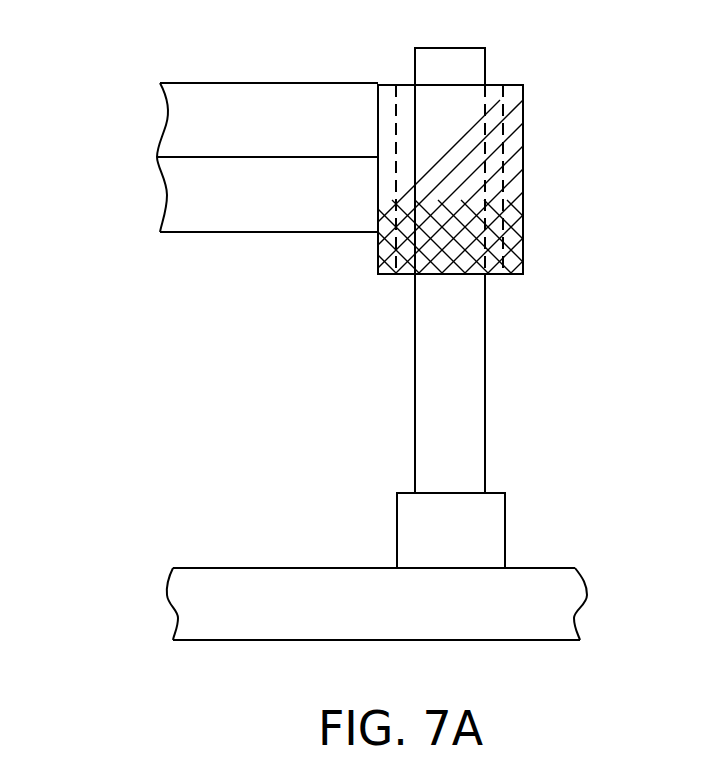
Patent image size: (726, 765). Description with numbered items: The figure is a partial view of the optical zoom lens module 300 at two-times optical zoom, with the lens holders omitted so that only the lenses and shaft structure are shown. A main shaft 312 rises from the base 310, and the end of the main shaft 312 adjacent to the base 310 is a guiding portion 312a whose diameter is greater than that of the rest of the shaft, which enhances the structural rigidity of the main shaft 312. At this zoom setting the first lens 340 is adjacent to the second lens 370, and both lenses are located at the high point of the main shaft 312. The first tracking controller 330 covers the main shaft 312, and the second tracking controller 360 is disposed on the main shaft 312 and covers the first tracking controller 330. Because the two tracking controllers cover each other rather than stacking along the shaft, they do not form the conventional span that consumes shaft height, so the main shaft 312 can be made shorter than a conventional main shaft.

The optical zoom lens module 300 is at (664, 664).
The base 310 is at (177, 587).
The main shaft 312 is at (427, 390).
The guiding portion 312a is at (407, 537).
The first tracking controller 330 is at (503, 103).
The first lens 340 is at (163, 127).
The second tracking controller 360 is at (512, 166).
The second lens 370 is at (159, 190).